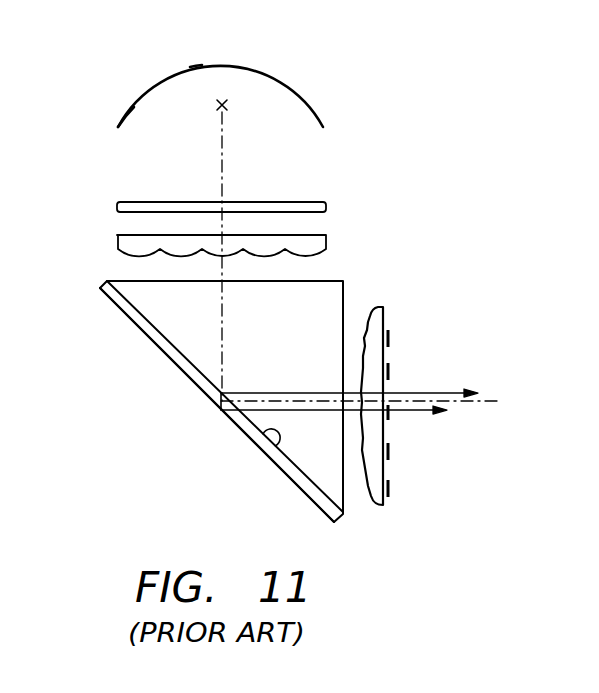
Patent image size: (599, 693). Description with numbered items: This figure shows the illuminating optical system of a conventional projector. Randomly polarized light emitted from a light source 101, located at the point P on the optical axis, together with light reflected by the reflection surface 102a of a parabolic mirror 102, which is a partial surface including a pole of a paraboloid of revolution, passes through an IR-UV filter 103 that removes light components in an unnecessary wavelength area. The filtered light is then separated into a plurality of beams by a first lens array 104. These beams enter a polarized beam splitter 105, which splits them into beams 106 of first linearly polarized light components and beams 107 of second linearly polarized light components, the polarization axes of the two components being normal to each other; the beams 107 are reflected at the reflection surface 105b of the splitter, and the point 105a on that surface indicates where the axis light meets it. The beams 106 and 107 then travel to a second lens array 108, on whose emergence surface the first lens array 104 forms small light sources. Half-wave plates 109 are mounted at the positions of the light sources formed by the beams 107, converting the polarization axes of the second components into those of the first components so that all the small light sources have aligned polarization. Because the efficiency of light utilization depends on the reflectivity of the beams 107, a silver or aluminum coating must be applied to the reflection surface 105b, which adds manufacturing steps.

The light emitting point P is at (197, 65).
The light source 101 is at (223, 100).
The parabolic mirror 102 is at (307, 98).
The reflection surface 102a is at (140, 100).
The IR-UV filter 103 is at (273, 200).
The first lens array 104 is at (118, 244).
The polarized beam splitter 105 is at (344, 298).
The prism reflecting point 105a is at (264, 452).
The reflection surface 105b is at (131, 322).
The beams of first linearly polarized light components 106 is at (443, 391).
The beams of second linearly polarized light components 107 is at (415, 412).
The second lens array 108 is at (383, 505).
The half-wave plates 109 is at (390, 452).